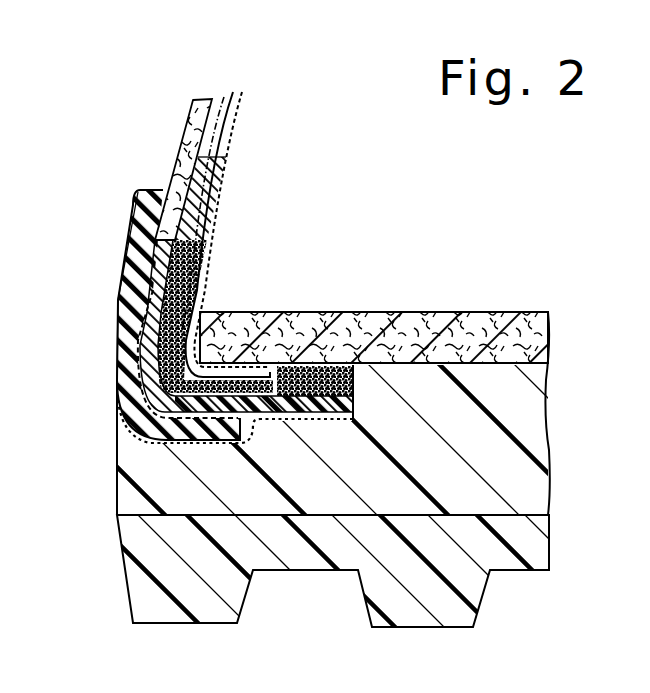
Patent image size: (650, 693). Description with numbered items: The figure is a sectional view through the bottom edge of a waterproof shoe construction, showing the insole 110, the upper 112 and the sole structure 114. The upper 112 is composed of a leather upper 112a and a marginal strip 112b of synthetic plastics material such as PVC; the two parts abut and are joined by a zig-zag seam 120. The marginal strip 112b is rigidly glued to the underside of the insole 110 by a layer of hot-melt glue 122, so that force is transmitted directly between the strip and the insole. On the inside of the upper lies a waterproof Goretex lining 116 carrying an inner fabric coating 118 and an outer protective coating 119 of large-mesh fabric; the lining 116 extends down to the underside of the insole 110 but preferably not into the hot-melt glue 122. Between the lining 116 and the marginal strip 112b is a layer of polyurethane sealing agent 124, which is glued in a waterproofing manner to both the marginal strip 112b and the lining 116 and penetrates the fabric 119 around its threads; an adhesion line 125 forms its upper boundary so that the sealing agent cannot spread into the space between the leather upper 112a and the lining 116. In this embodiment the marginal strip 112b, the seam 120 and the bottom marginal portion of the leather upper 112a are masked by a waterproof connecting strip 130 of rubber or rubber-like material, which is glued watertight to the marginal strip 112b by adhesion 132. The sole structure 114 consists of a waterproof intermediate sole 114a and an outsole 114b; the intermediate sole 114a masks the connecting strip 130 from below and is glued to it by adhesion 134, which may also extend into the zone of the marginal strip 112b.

The insole 110 is at (470, 313).
The upper 112 is at (190, 236).
The leather upper 112a is at (170, 187).
The marginal strip 112b is at (120, 337).
The sole structure 114 is at (325, 496).
The intermediate sole 114a is at (138, 480).
The outsole 114b is at (193, 610).
The lining 116 is at (233, 92).
The inner fabric coating 118 is at (240, 117).
The outer protective coating 119 is at (225, 95).
The zig-zag seam 120 is at (150, 243).
The layer of hot-melt glue 122 is at (327, 395).
The layer of polyurethane sealing agent 124 is at (200, 293).
The adhesion line 125 is at (162, 190).
The connecting strip 130 is at (121, 283).
The adhesion 132 is at (121, 362).
The adhesion 134 is at (118, 433).